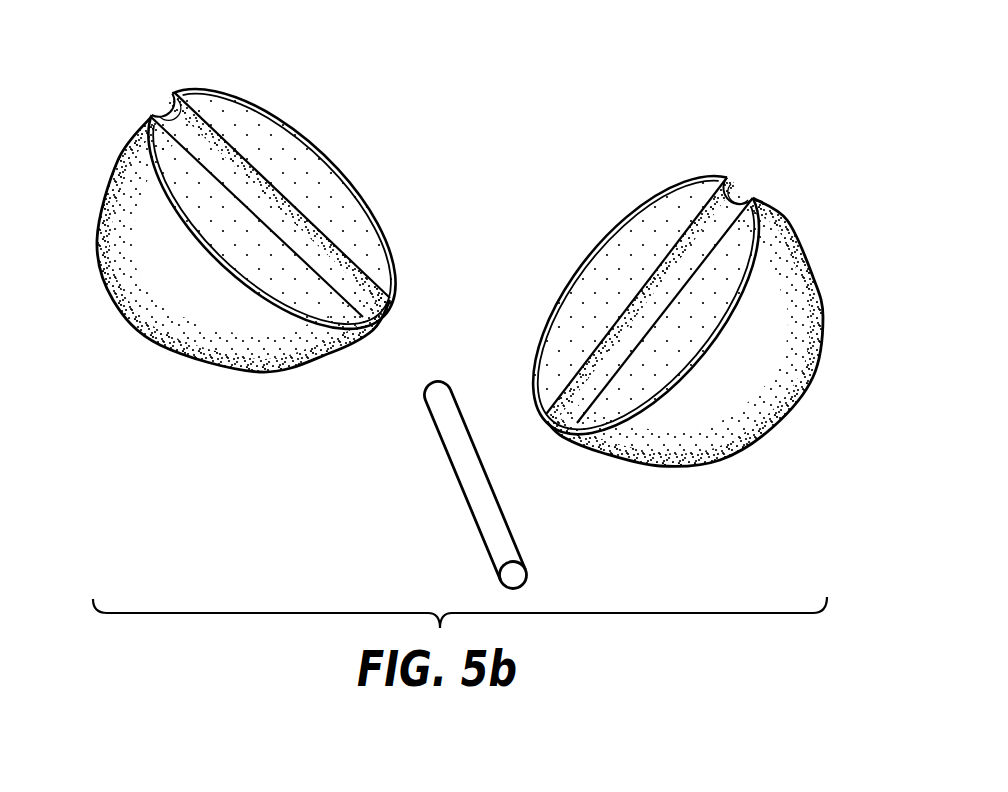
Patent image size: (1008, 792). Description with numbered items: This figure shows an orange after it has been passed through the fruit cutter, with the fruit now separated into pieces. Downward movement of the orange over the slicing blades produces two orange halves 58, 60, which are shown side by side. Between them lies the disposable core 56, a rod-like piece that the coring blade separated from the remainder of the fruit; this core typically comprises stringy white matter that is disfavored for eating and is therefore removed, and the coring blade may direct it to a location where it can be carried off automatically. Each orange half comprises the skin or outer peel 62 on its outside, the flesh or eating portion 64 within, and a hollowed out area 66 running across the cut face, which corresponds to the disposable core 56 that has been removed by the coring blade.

The disposable core 56 is at (500, 540).
The orange half 58 is at (190, 369).
The orange half 60 is at (829, 296).
The skin or outer peel 62 is at (384, 230).
The flesh or eating portion 64 is at (302, 162).
The hollowed out area 66 is at (208, 128).